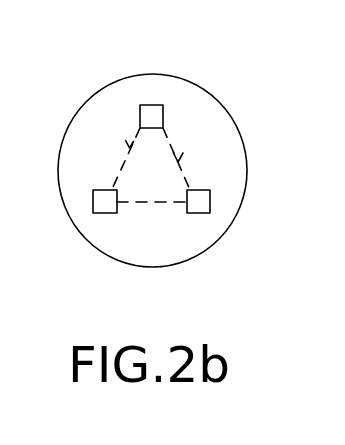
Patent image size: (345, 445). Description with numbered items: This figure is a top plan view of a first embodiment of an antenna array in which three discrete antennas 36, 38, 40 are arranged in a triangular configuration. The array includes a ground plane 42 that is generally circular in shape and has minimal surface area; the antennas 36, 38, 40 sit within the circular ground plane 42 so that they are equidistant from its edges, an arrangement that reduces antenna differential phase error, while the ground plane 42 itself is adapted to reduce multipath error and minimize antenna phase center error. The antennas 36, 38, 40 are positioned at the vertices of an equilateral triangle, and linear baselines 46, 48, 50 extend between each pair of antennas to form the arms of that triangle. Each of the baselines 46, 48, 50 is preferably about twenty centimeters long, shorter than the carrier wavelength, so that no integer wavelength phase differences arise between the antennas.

The discrete antenna 36 is at (113, 187).
The discrete antenna 38 is at (146, 126).
The discrete antenna 40 is at (190, 200).
The ground plane 42 is at (172, 253).
The linear baseline 46 is at (185, 152).
The linear baseline 48 is at (160, 202).
The linear baseline 50 is at (120, 143).